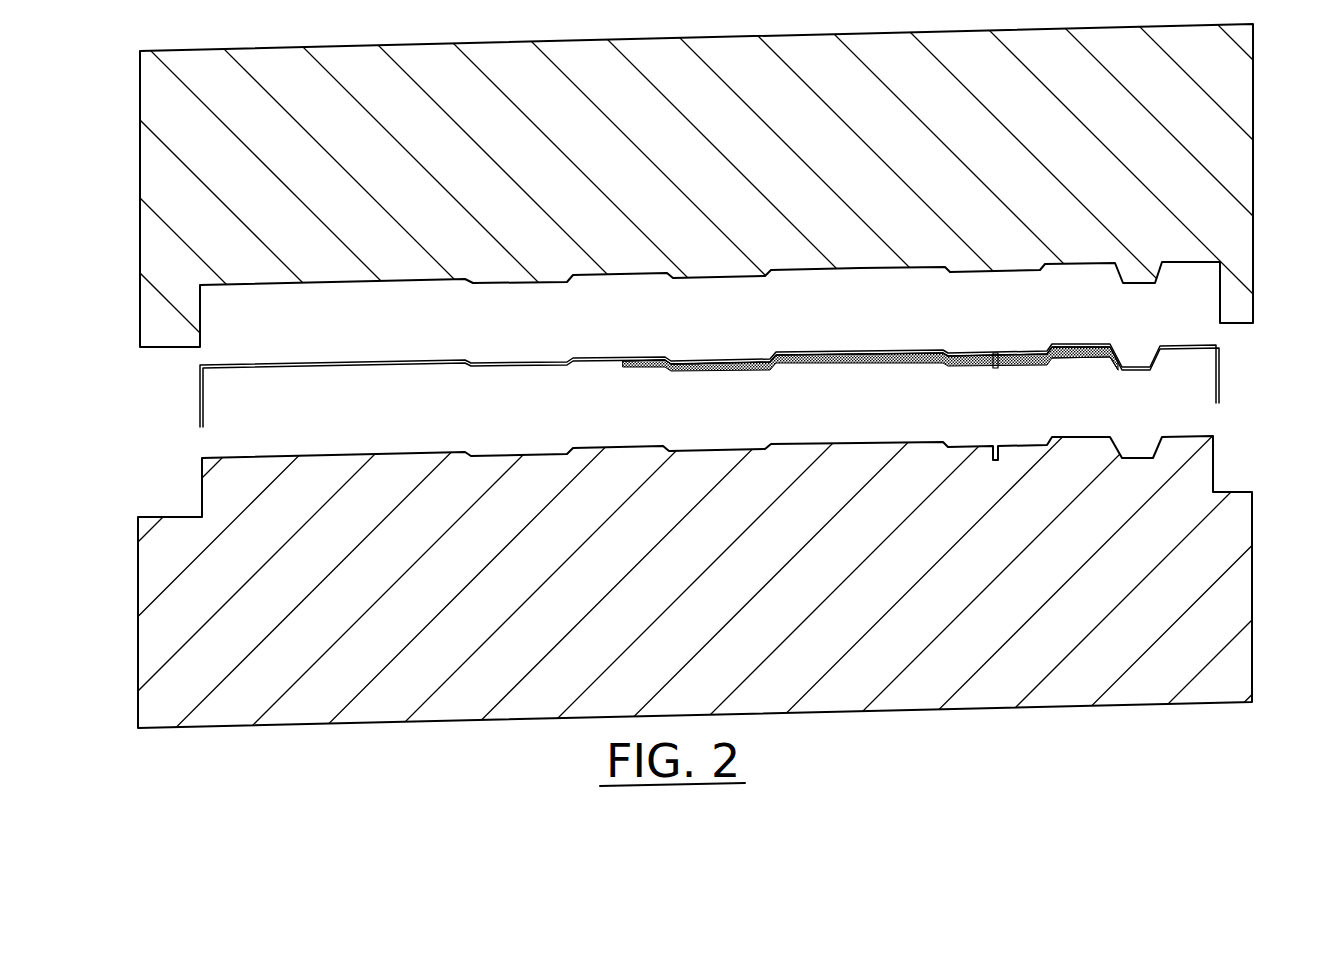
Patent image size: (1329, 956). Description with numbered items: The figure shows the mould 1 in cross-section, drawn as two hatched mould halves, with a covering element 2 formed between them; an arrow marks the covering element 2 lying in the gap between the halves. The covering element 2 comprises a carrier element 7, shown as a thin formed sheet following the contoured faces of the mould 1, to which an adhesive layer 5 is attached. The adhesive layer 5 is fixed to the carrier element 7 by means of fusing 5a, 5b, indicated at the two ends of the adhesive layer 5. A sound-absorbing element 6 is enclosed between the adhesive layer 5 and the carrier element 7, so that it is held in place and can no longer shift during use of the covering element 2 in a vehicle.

The mould 1 is at (1227, 527).
The covering element 2 is at (160, 416).
The adhesive layer 5 is at (960, 367).
The fusing 5a is at (605, 362).
The fusing 5b is at (1137, 373).
The sound-absorbing element 6 is at (845, 364).
The carrier element 7 is at (1220, 372).